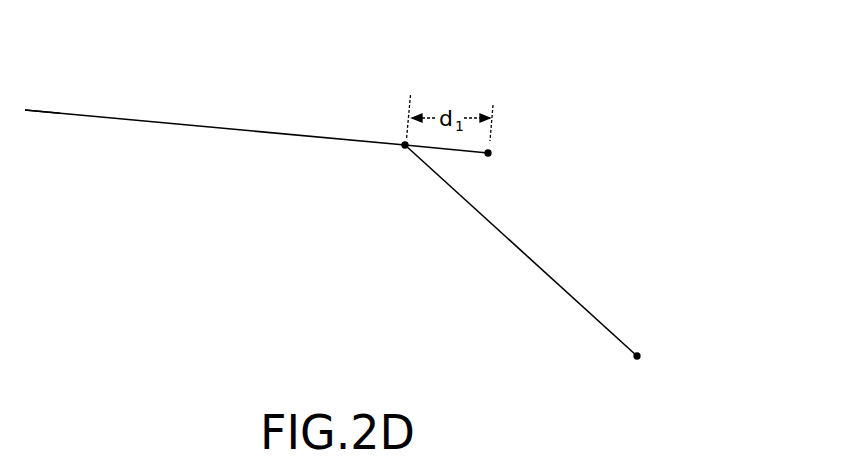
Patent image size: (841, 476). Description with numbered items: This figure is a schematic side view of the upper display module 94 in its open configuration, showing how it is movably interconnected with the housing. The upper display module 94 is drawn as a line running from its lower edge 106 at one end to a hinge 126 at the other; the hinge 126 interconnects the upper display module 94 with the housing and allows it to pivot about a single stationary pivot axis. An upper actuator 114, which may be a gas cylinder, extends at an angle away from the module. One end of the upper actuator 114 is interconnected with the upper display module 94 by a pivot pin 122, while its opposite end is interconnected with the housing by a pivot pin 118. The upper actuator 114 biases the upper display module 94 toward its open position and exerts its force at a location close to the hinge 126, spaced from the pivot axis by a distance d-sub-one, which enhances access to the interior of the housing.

The upper display module 94 is at (212, 128).
The lower edge 106 is at (25, 110).
The pivot pin 122 is at (404, 147).
The hinge 126 is at (491, 153).
The upper actuator 114 is at (562, 284).
The pivot pin 118 is at (641, 356).